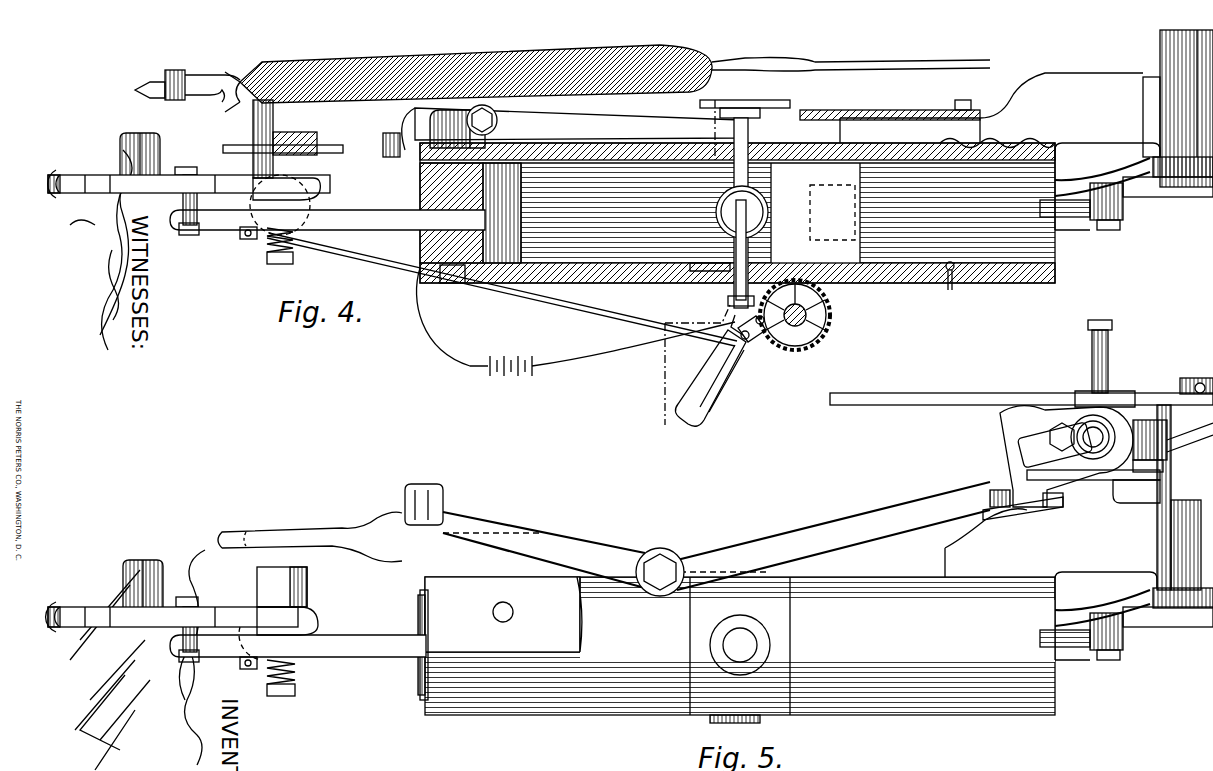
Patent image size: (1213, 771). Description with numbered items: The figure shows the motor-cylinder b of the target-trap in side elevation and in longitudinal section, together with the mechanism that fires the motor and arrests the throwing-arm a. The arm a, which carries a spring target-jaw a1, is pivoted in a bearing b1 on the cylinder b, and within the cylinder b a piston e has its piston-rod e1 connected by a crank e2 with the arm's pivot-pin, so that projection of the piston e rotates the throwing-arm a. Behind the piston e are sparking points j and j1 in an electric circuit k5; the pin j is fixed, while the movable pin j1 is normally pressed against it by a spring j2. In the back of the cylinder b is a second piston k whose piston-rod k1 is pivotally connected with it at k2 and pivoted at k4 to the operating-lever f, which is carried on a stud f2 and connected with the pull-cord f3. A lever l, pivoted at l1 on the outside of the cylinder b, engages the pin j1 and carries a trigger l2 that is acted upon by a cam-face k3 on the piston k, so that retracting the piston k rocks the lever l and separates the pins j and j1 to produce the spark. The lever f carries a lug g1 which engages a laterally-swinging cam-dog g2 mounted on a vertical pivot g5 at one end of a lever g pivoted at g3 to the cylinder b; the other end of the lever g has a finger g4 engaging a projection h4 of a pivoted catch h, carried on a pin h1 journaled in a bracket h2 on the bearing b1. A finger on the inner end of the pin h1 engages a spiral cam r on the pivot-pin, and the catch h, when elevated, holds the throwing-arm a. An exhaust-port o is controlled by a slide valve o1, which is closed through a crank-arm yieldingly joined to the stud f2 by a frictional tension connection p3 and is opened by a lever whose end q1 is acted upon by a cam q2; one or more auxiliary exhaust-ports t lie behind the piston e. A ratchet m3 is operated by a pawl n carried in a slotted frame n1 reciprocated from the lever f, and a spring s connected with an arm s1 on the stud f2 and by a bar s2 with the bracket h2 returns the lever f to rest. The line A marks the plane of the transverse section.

In FIG. 4, the motor-cylinder b is at (886, 283).
In FIG. 5, the motor-cylinder b is at (736, 650).
In FIG. 4, the bearing b1 is at (1164, 58).
In FIG. 4, the piston k is at (512, 208).
In FIG. 5, the piston k is at (420, 682).
In FIG. 4, the piston-rod k1 is at (330, 208).
In FIG. 5, the piston-rod k1 is at (352, 657).
In FIG. 4, the pivotal connection k2 is at (452, 282).
In FIG. 4, the cam-face k3 is at (428, 130).
In FIG. 4, the pivot k4 is at (176, 202).
In FIG. 5, the pivot k4 is at (177, 630).
In FIG. 4, the electric circuit k5 is at (436, 340).
In FIG. 4, the operating-lever f is at (96, 175).
In FIG. 5, the operating-lever f is at (226, 607).
In FIG. 4, the stud f2 is at (250, 70).
In FIG. 4, the pull-cord f3 is at (50, 200).
In FIG. 5, the pull-cord f3 is at (60, 598).
In FIG. 5, the lever g is at (560, 540).
In FIG. 4, the lug g1 is at (150, 148).
In FIG. 5, the lug g1 is at (150, 568).
In FIG. 5, the cam-dog g2 is at (338, 516).
In FIG. 5, the pivot g3 is at (656, 564).
In FIG. 5, the finger g4 is at (992, 490).
In FIG. 5, the vertical pivot g5 is at (422, 494).
In FIG. 4, the frictional tension connection p3 is at (268, 248).
In FIG. 5, the frictional tension connection p3 is at (270, 668).
In FIG. 4, the lever l is at (620, 124).
In FIG. 4, the pivot l1 is at (497, 120).
In FIG. 4, the trigger l2 is at (404, 150).
In FIG. 4, the spring s is at (410, 60).
In FIG. 4, the arm s1 is at (205, 75).
In FIG. 4, the bar s2 is at (910, 62).
In FIG. 4, the fixed sparking point j is at (733, 225).
In FIG. 4, the movable sparking point j1 is at (705, 130).
In FIG. 4, the spring j2 is at (840, 108).
In FIG. 4, the piston e is at (788, 190).
In FIG. 4, the piston-rod e1 is at (1065, 218).
In FIG. 5, the piston-rod e1 is at (1065, 648).
In FIG. 4, the crank e2 is at (1157, 197).
In FIG. 5, the crank e2 is at (1157, 627).
In FIG. 4, the exhaust-port o is at (716, 212).
In FIG. 4, the slide valve o1 is at (721, 222).
In FIG. 4, the section line A is at (688, 270).
In FIG. 4, the auxiliary exhaust-port t is at (950, 292).
In FIG. 4, the ratchet m3 is at (810, 330).
In FIG. 4, the pawl n is at (752, 342).
In FIG. 4, the slotted frame n1 is at (716, 392).
In FIG. 4, the lever end q1 is at (1078, 175).
In FIG. 5, the lever end q1 is at (1092, 608).
In FIG. 4, the cam q2 is at (1172, 172).
In FIG. 5, the cam q2 is at (1172, 604).
In FIG. 5, the catch h is at (1004, 440).
In FIG. 5, the pin h1 is at (1138, 428).
In FIG. 5, the bracket h2 is at (1140, 482).
In FIG. 5, the projection h4 is at (995, 512).
In FIG. 5, the throwing-arm a is at (984, 393).
In FIG. 5, the spring target-jaw a1 is at (1198, 378).
In FIG. 5, the spiral cam r is at (1199, 455).